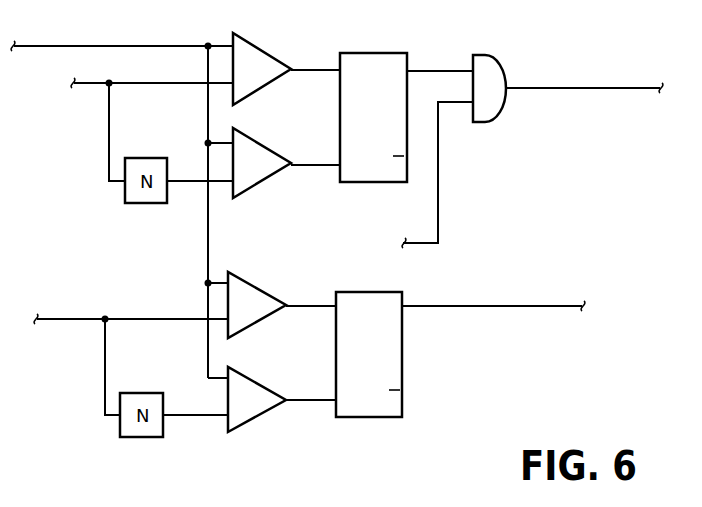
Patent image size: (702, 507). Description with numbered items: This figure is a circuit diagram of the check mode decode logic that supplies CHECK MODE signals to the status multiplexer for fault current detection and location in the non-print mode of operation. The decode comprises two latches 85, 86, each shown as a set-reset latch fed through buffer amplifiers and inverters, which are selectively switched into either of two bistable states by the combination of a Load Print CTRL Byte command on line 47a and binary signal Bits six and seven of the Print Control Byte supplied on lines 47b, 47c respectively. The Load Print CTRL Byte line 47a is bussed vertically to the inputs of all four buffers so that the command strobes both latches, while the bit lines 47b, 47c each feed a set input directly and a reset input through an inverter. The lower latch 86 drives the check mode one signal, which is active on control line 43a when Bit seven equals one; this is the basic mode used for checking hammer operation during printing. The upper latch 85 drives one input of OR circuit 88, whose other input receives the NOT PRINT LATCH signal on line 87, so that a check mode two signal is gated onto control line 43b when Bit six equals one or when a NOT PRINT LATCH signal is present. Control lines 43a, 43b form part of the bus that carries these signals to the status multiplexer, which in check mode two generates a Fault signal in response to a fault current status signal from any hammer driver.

The line 47a is at (200, 46).
The line 47b is at (97, 80).
The line 47c is at (99, 319).
The latch 85 is at (407, 53).
The latch 86 is at (402, 357).
The line 87 is at (438, 222).
The OR circuit 88 is at (497, 67).
The control line 43a is at (570, 309).
The control line 43b is at (658, 90).